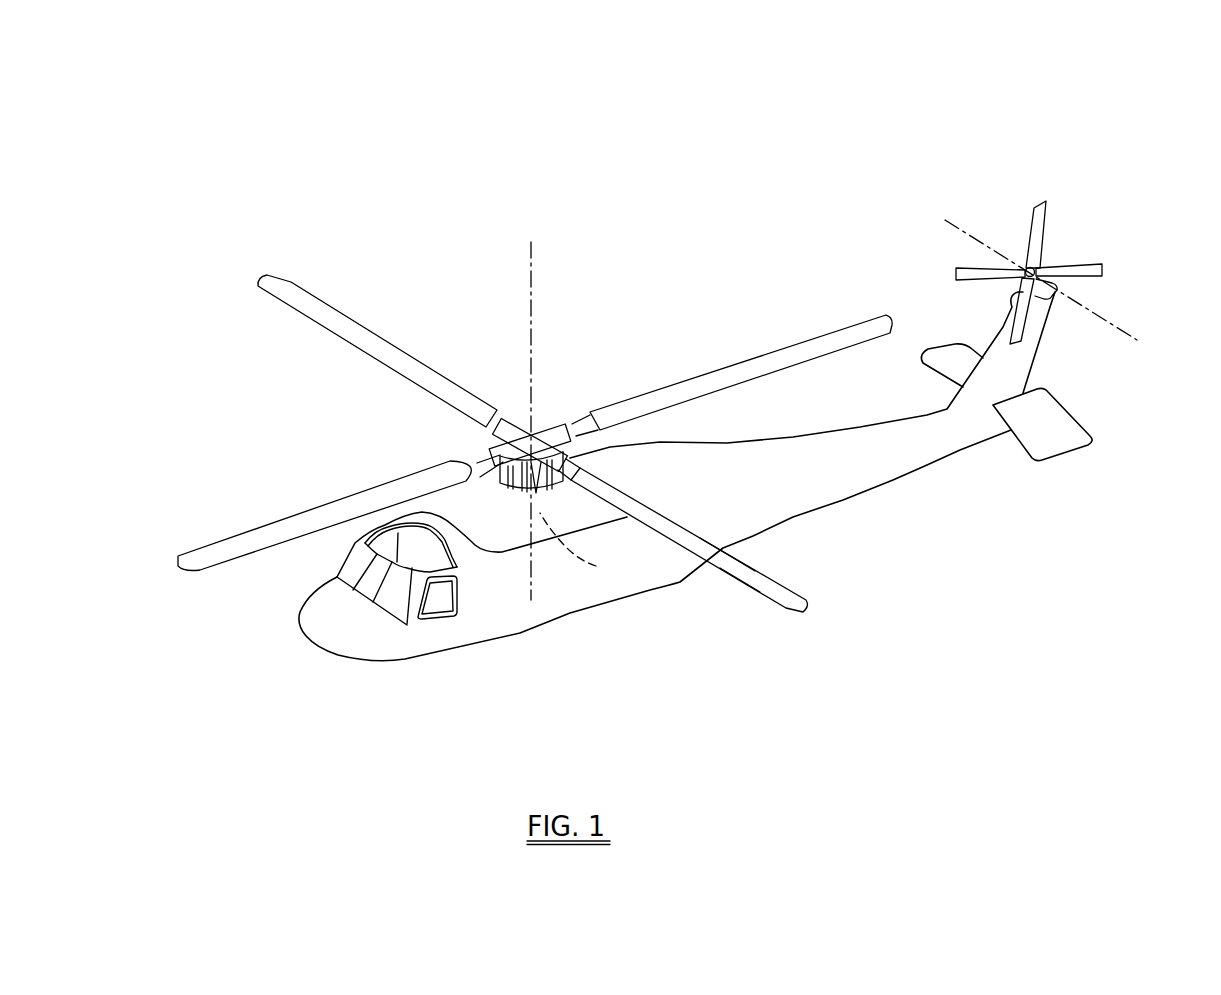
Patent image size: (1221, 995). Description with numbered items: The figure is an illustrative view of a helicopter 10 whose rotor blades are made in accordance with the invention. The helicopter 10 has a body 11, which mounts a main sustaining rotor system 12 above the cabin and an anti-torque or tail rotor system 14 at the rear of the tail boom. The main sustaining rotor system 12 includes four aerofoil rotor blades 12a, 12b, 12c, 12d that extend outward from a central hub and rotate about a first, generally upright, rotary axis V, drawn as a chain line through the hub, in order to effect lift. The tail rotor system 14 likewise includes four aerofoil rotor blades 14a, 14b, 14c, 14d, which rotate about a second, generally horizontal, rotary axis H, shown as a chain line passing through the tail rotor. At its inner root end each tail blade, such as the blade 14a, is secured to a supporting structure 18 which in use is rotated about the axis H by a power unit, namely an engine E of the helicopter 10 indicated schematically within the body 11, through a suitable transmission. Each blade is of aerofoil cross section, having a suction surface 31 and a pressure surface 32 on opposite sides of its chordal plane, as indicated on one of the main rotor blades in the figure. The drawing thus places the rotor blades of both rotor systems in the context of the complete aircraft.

The helicopter 10 is at (513, 673).
The body 11 is at (558, 604).
The main sustaining rotor system 12 is at (541, 414).
The aerofoil rotor blade 12a is at (770, 612).
The aerofoil rotor blade 12b is at (203, 557).
The aerofoil rotor blade 12c is at (333, 316).
The aerofoil rotor blade 12d is at (840, 332).
The anti-torque tail rotor system 14 is at (1054, 257).
The aerofoil rotor blade 14a is at (1049, 208).
The aerofoil rotor blade 14b is at (1098, 267).
The aerofoil rotor blade 14c is at (1022, 333).
The aerofoil rotor blade 14d is at (966, 270).
The supporting structure 18 is at (1014, 286).
The suction surface 31 is at (752, 578).
The pressure surface 32 is at (737, 586).
The first rotary axis V is at (533, 274).
The second rotary axis H is at (1138, 312).
The engine E is at (596, 566).